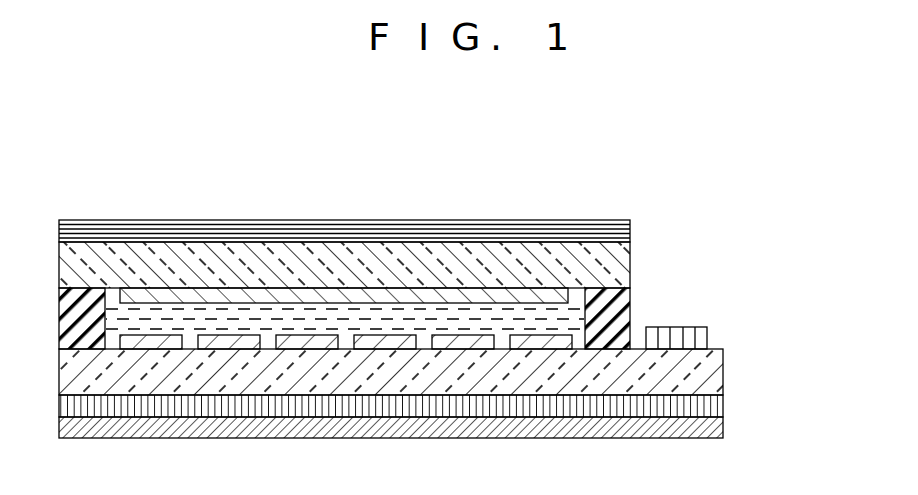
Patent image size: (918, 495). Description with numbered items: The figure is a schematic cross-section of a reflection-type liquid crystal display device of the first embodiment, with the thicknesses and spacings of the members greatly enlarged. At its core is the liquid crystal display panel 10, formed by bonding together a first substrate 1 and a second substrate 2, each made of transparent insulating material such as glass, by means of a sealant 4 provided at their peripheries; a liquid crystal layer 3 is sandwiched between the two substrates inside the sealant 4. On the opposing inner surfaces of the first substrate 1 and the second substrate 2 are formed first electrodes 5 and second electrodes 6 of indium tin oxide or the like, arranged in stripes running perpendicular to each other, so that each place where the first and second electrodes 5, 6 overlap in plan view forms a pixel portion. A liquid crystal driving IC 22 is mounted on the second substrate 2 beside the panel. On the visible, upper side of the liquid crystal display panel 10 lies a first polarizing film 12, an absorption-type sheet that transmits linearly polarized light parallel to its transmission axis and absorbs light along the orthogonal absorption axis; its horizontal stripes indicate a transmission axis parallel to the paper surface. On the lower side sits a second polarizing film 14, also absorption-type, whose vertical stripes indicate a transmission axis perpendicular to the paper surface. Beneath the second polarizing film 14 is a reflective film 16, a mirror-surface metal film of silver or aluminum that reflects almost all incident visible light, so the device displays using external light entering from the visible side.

The first substrate 1 is at (615, 265).
The second substrate 2 is at (707, 377).
The liquid crystal layer 3 is at (417, 318).
The sealant 4 is at (623, 300).
The first electrode 5 is at (477, 297).
The second electrode 6 is at (522, 332).
The liquid crystal display panel 10 is at (808, 233).
The first polarizing film 12 is at (615, 232).
The second polarizing film 14 is at (707, 405).
The reflective film 16 is at (710, 427).
The liquid crystal driving IC 22 is at (693, 343).